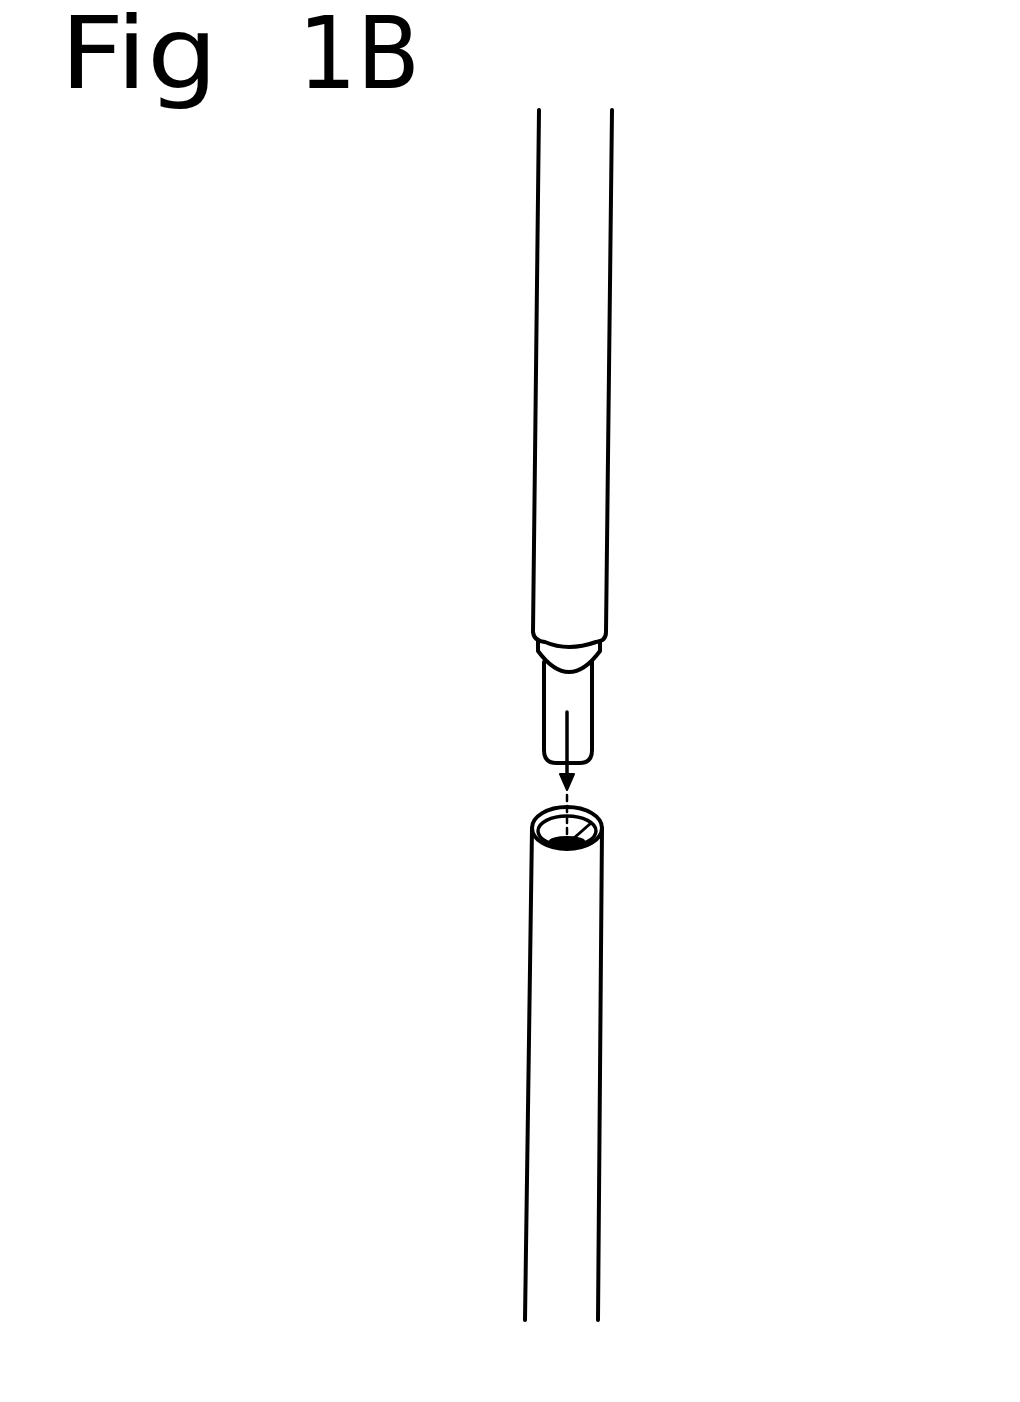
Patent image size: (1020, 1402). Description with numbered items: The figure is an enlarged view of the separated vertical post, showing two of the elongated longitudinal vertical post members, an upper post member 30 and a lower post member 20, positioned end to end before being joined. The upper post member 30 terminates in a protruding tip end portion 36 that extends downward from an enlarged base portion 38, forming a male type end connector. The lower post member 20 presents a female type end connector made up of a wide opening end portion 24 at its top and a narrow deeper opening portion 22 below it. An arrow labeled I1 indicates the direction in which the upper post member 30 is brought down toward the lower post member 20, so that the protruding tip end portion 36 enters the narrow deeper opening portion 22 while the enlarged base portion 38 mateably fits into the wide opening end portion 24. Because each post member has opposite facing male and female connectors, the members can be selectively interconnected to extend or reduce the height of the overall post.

The vertical post member 30 is at (572, 396).
The enlarged base portion 38 is at (578, 655).
The protruding tip end portion 36 is at (572, 720).
The insertion direction arrow I1 is at (605, 776).
The vertical post member 20 is at (562, 1090).
The narrow deeper opening portion 22 is at (602, 820).
The wide opening end portion 24 is at (530, 827).